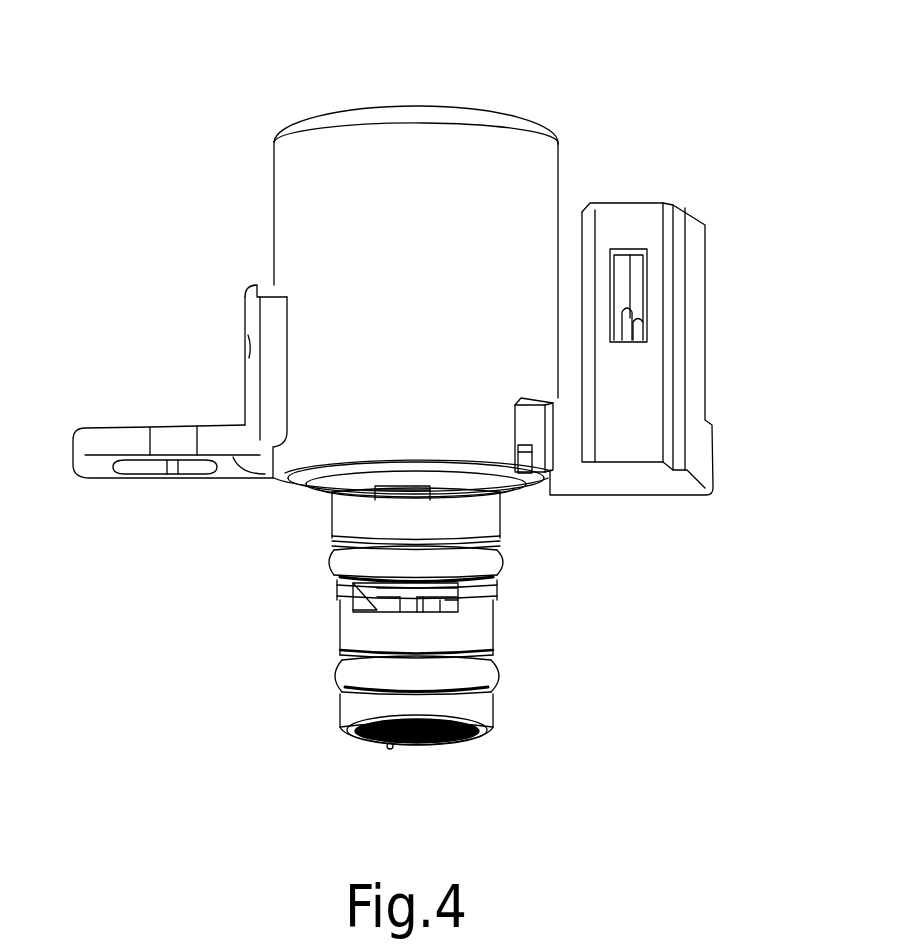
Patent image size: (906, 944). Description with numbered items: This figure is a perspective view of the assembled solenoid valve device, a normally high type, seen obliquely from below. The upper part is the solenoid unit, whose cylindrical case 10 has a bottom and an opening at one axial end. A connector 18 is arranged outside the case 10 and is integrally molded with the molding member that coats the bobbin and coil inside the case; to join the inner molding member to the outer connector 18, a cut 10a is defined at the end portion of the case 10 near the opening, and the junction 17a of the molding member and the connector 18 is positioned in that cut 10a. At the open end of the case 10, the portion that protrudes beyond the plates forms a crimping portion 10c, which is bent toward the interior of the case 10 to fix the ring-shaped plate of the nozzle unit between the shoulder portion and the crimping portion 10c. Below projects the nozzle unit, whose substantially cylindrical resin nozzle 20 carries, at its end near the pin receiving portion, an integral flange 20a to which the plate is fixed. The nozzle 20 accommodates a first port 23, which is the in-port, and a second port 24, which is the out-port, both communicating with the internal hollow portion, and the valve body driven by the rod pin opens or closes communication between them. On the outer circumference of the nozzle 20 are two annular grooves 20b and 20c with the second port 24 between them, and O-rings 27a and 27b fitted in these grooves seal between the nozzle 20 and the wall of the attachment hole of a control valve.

The case 10 is at (398, 170).
The cut 10a is at (531, 397).
The crimping portion 10c is at (296, 491).
The junction 17a is at (538, 432).
The connector 18 is at (705, 237).
The nozzle 20 is at (342, 523).
The flange 20a is at (330, 502).
The annular groove 20b is at (503, 550).
The annular groove 20c is at (496, 697).
The first port 23 is at (457, 745).
The second port 24 is at (352, 605).
The O-ring 27a is at (505, 575).
The O-ring 27b is at (500, 688).